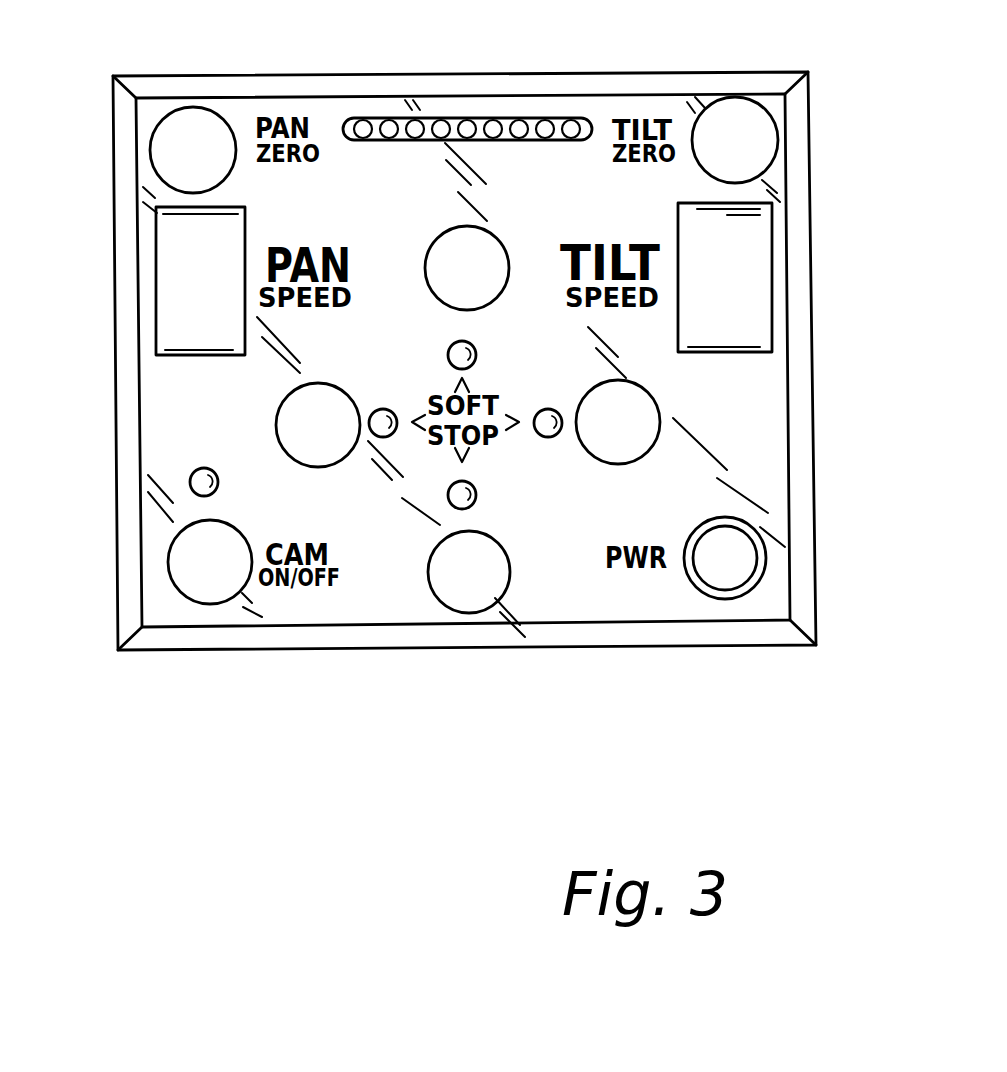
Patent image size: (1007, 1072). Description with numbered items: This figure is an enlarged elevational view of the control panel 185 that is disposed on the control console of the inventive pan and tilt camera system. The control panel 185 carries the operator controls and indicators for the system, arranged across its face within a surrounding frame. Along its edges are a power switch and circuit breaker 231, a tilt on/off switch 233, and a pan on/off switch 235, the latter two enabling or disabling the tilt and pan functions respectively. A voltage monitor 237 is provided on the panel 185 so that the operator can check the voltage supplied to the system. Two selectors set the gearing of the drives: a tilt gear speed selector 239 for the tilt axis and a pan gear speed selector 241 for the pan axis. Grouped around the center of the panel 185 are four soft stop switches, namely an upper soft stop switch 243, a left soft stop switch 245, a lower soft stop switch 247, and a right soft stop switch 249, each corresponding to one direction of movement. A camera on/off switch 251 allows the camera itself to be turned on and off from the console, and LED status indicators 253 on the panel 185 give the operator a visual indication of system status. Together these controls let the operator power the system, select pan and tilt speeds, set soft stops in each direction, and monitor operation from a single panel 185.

The control panel 185 is at (276, 660).
The power switch and circuit breaker 231 is at (725, 570).
The tilt on/off switch 233 is at (757, 140).
The pan on/off switch 235 is at (190, 128).
The voltage monitor 237 is at (490, 130).
The tilt gear speed selector 239 is at (742, 313).
The pan gear speed selector 241 is at (167, 302).
The upper soft stop switch 243 is at (483, 258).
The left soft stop switch 245 is at (280, 422).
The lower soft stop switch 247 is at (470, 585).
The right soft stop switch 249 is at (625, 432).
The camera on/off switch 251 is at (205, 585).
The LED status indicators 253 is at (392, 512).